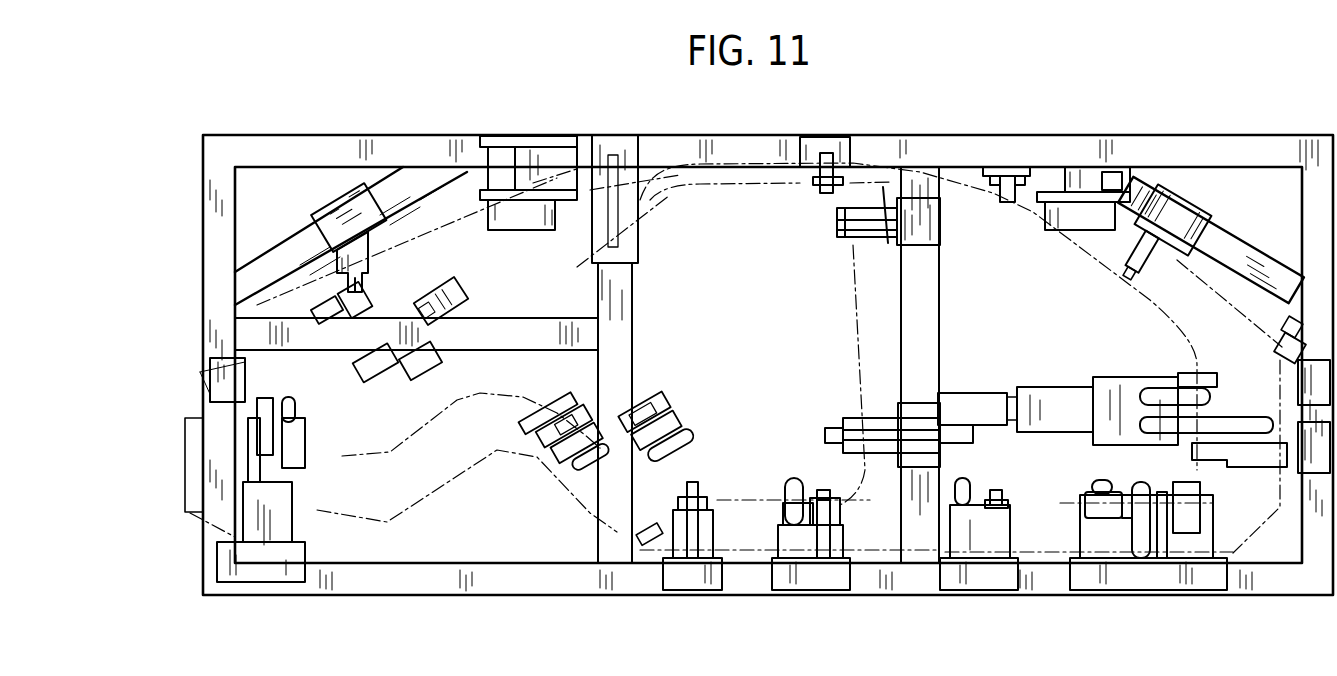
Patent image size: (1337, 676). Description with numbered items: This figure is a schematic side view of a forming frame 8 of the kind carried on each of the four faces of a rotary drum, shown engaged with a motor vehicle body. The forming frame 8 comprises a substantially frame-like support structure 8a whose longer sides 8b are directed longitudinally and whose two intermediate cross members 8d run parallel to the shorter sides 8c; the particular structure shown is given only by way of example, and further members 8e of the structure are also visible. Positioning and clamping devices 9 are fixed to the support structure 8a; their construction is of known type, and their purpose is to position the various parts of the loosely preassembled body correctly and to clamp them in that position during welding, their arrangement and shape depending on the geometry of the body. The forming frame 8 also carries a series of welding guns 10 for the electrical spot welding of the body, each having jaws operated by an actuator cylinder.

The forming frame 8 is at (470, 108).
The support structure 8a is at (392, 133).
The longer sides 8b is at (695, 150).
The shorter sides 8c is at (222, 218).
The intermediate cross members 8d is at (632, 303).
The support bar 8e is at (287, 268).
The positioning and clamping devices 9 is at (605, 185).
The welding guns 10 is at (383, 368).